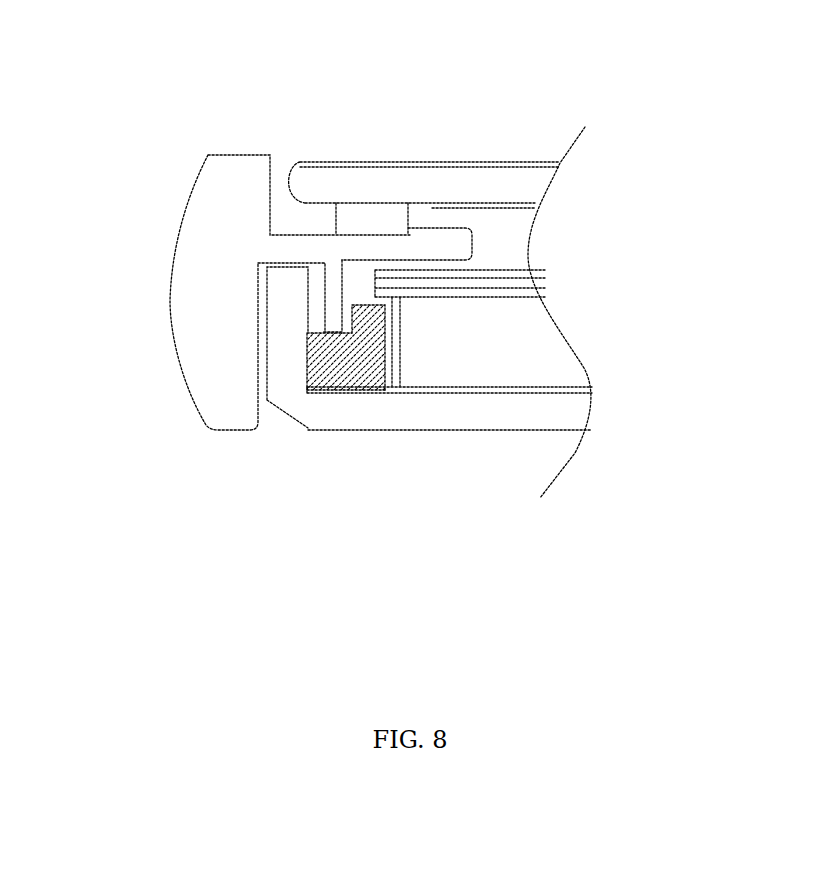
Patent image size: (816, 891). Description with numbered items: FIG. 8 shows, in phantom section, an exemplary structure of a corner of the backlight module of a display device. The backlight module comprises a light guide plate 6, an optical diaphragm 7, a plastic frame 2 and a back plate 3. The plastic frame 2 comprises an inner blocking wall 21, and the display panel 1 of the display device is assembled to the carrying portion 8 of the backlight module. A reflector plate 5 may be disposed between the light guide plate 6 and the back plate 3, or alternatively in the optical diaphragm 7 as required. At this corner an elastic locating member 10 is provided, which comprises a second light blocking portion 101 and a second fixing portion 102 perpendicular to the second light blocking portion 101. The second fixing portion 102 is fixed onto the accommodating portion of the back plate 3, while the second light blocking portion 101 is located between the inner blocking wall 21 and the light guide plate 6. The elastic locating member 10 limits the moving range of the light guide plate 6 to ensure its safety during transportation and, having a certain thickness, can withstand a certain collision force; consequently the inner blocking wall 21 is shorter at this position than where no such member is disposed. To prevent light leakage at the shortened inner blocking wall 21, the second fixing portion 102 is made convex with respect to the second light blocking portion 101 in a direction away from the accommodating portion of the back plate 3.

The display panel 1 is at (310, 180).
The plastic frame 2 is at (228, 232).
The back plate 3 is at (287, 303).
The inner blocking wall 21 is at (335, 325).
The second light blocking portion 101 is at (323, 362).
The elastic locating member 10 is at (385, 360).
The second fixing portion 102 is at (365, 325).
The reflector plate 5 is at (412, 396).
The light guide plate 6 is at (540, 370).
The optical diaphragm 7 is at (507, 290).
The carrying portion 8 is at (380, 218).